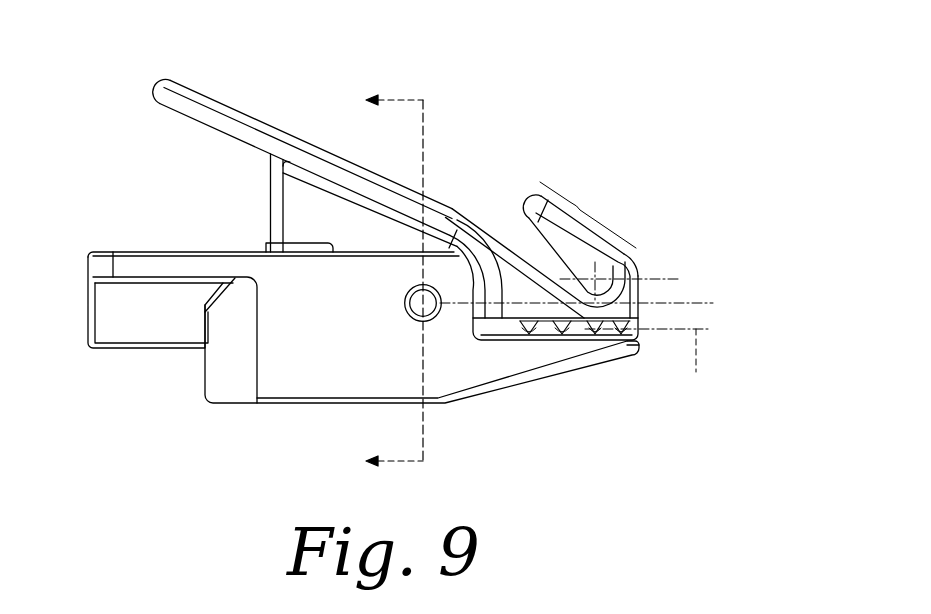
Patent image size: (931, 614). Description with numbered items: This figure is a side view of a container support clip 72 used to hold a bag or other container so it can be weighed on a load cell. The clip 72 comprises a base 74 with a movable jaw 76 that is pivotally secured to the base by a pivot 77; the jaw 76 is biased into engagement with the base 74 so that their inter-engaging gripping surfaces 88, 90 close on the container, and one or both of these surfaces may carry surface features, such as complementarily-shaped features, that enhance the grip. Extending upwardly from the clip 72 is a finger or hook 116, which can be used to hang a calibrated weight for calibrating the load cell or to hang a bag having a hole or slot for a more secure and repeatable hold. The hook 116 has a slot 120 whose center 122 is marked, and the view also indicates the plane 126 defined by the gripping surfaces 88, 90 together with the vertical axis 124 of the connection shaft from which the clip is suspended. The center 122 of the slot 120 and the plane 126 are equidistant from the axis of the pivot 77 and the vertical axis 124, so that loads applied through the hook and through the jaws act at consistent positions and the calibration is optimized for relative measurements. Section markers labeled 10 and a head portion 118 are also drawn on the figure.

The section line of FIG. 10 is at (379, 280).
The container support clip 72 is at (449, 84).
The base 74 is at (282, 393).
The movable jaw 76 is at (305, 180).
The pivot 77 is at (434, 318).
The gripping surface 88 is at (600, 332).
The gripping surface 90 is at (580, 331).
The hook 116 is at (528, 192).
The head 118 is at (585, 216).
The slot 120 is at (510, 218).
The center 122 is at (595, 279).
The vertical axis 124 is at (713, 303).
The plane 126 is at (696, 372).